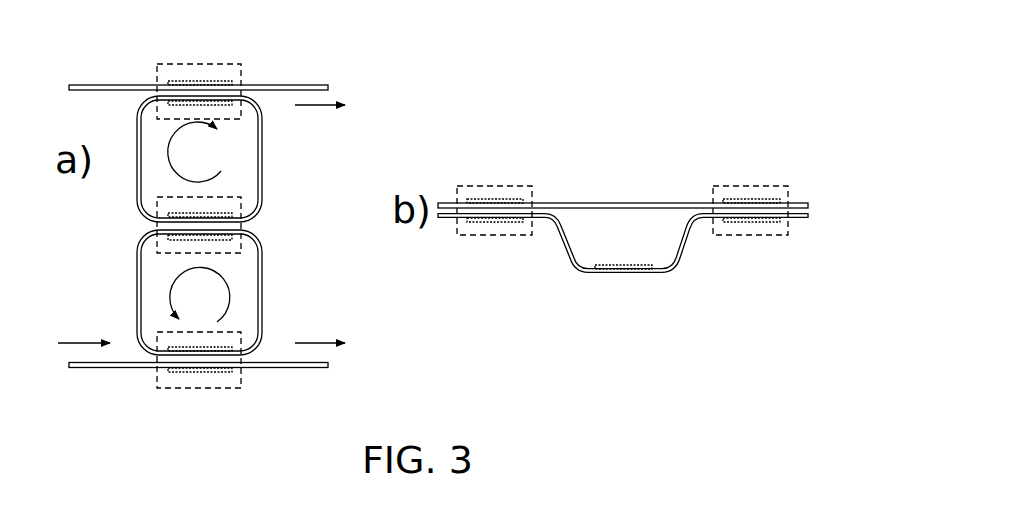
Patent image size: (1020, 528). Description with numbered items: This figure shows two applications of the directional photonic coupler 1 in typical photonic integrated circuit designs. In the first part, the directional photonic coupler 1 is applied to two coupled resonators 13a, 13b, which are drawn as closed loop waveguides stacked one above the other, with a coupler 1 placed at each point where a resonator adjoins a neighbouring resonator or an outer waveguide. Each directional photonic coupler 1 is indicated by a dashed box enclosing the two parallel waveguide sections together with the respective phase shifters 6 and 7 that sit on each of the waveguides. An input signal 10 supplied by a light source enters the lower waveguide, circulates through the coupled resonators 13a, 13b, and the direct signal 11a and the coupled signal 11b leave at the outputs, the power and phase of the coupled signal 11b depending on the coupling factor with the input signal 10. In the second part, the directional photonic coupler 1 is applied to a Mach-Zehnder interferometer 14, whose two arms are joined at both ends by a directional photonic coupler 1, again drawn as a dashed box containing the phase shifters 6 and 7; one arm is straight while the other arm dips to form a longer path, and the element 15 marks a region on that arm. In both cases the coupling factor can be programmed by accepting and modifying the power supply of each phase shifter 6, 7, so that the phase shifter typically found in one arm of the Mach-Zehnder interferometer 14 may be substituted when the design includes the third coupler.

The directional photonic coupler 1 is at (200, 65).
The phase shifter 6 is at (177, 82).
The phase shifter 7 is at (227, 72).
The input signal 10 is at (78, 338).
The direct signal 11a is at (312, 340).
The coupled signal 11b is at (308, 108).
The coupled resonator 13a is at (263, 307).
The coupled resonator 13b is at (264, 152).
The Mach-Zehnder interferometer 14 is at (697, 138).
The trough bottom joint 15 is at (623, 268).